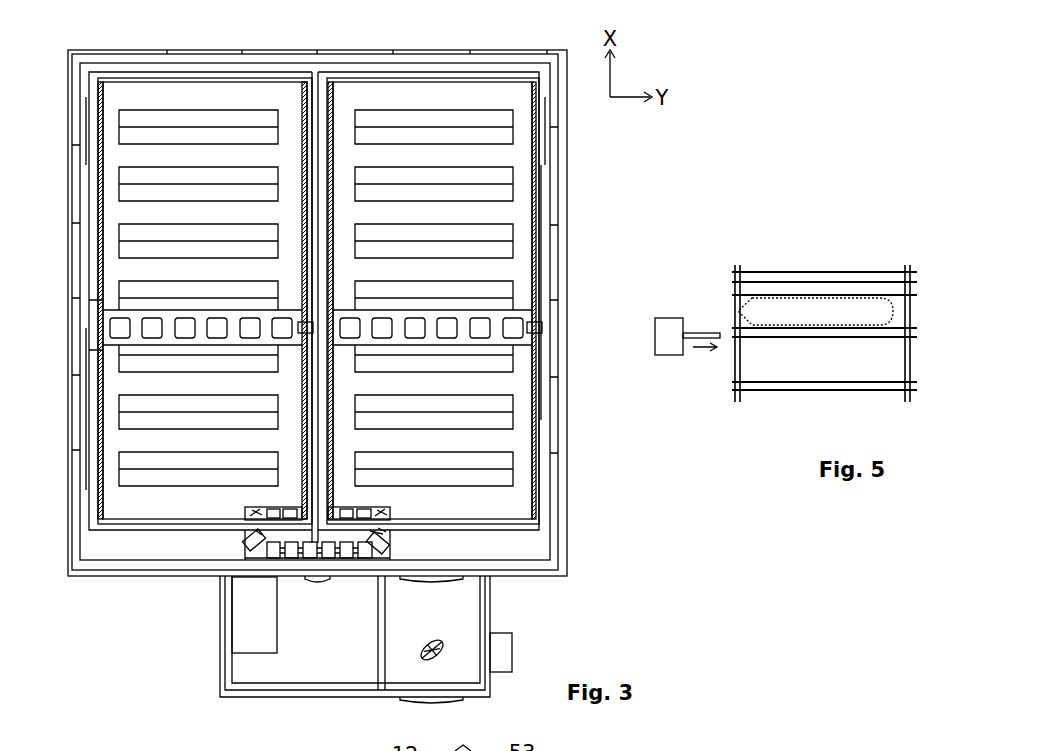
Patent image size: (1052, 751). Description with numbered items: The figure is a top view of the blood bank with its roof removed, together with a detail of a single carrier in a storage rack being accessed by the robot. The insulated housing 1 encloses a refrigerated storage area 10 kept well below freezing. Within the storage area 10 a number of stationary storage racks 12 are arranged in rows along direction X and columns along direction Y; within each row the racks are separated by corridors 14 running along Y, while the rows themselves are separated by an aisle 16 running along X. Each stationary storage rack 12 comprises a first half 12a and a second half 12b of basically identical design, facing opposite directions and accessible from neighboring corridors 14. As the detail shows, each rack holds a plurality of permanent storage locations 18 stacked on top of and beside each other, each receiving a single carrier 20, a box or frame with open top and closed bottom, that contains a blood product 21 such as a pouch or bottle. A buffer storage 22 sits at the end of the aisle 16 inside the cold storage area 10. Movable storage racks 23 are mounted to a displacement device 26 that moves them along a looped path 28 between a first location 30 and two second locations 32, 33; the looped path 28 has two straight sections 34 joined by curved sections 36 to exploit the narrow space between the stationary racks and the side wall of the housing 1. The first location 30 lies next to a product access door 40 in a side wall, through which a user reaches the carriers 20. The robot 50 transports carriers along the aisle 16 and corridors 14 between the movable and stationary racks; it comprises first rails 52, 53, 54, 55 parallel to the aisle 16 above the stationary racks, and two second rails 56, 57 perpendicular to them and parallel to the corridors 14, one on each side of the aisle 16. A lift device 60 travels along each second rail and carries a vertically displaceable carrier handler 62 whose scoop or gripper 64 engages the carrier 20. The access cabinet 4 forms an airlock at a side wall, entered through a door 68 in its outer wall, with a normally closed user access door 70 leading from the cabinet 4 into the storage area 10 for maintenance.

In FIG. 3, the housing 1 is at (587, 179).
In FIG. 3, the access cabinet 4 is at (385, 662).
In FIG. 3, the storage area 10 is at (218, 88).
In FIG. 3, the stationary storage rack 12 is at (375, 271).
In FIG. 5, the stationary storage rack 12 is at (815, 363).
In FIG. 3, the first half 12a is at (503, 462).
In FIG. 3, the second half 12b is at (503, 477).
In FIG. 3, the corridor 14 is at (147, 157).
In FIG. 3, the aisle 16 is at (288, 113).
In FIG. 5, the permanent storage location 18 is at (819, 265).
In FIG. 5, the carrier 20 is at (732, 282).
In FIG. 5, the blood product 21 is at (786, 298).
In FIG. 3, the buffer storage 22 is at (230, 545).
In FIG. 3, the movable storage rack 23 is at (260, 532).
In FIG. 3, the displacement device 26 is at (383, 534).
In FIG. 3, the looped path 28 is at (385, 531).
In FIG. 3, the first location 30 is at (354, 557).
In FIG. 3, the second location 32 is at (285, 505).
In FIG. 3, the second location 33 is at (340, 513).
In FIG. 3, the straight section 34 is at (293, 555).
In FIG. 3, the curved section 36 is at (263, 547).
In FIG. 3, the product access door 40 is at (317, 578).
In FIG. 3, the robot 50 is at (105, 302).
In FIG. 3, the first rail 52 is at (100, 110).
In FIG. 3, the first rail 53 is at (303, 80).
In FIG. 3, the first rail 54 is at (332, 95).
In FIG. 3, the first rail 55 is at (532, 83).
In FIG. 3, the second rail 56 is at (137, 312).
In FIG. 3, the second rail 57 is at (555, 248).
In FIG. 3, the lift device 60 is at (185, 337).
In FIG. 3, the carrier handler 62 is at (505, 673).
In FIG. 5, the carrier handler 62 is at (667, 318).
In FIG. 5, the scoop or gripper 64 is at (711, 333).
In FIG. 3, the door 68 is at (415, 700).
In FIG. 3, the user access door 70 is at (410, 577).